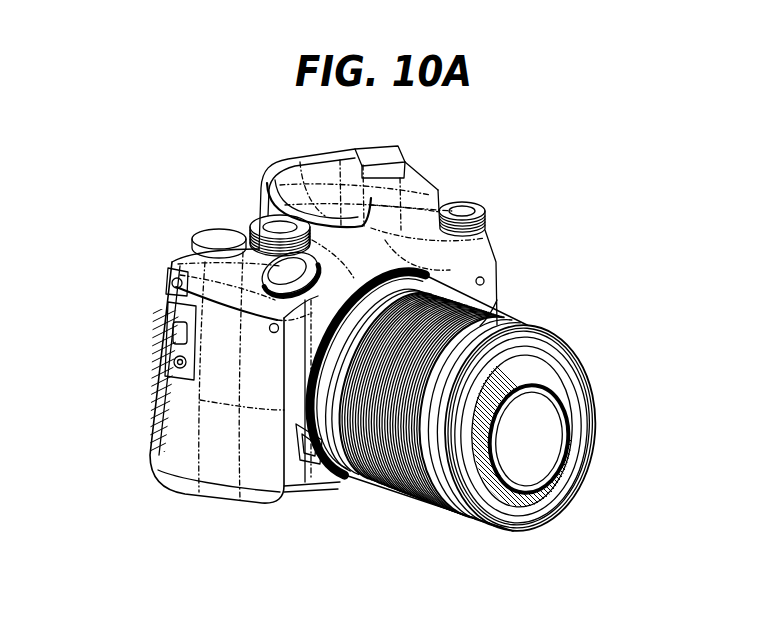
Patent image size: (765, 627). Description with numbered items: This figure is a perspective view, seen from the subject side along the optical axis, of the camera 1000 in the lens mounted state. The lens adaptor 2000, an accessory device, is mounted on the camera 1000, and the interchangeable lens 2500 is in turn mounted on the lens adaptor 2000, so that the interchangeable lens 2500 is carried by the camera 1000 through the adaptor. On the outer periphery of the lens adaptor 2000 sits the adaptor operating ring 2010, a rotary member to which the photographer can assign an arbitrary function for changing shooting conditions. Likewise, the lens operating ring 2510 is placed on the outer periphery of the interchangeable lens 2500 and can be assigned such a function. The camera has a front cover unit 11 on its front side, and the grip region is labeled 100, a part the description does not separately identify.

The camera 1000 is at (447, 170).
The camera body 100 is at (255, 470).
The front cover unit 11 is at (222, 340).
The lens adaptor 2000 is at (387, 287).
The adaptor operating ring 2010 is at (335, 440).
The lens operating ring 2510 is at (407, 453).
The interchangeable lens 2500 is at (480, 537).